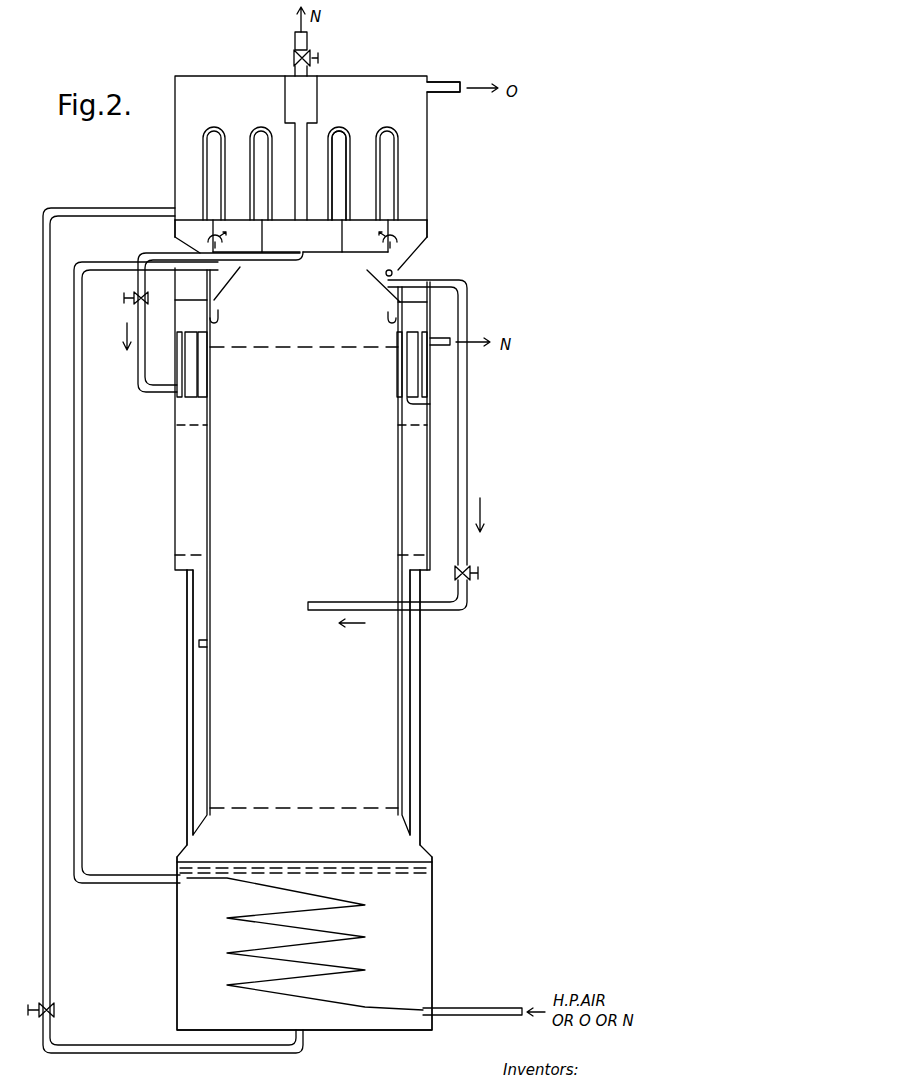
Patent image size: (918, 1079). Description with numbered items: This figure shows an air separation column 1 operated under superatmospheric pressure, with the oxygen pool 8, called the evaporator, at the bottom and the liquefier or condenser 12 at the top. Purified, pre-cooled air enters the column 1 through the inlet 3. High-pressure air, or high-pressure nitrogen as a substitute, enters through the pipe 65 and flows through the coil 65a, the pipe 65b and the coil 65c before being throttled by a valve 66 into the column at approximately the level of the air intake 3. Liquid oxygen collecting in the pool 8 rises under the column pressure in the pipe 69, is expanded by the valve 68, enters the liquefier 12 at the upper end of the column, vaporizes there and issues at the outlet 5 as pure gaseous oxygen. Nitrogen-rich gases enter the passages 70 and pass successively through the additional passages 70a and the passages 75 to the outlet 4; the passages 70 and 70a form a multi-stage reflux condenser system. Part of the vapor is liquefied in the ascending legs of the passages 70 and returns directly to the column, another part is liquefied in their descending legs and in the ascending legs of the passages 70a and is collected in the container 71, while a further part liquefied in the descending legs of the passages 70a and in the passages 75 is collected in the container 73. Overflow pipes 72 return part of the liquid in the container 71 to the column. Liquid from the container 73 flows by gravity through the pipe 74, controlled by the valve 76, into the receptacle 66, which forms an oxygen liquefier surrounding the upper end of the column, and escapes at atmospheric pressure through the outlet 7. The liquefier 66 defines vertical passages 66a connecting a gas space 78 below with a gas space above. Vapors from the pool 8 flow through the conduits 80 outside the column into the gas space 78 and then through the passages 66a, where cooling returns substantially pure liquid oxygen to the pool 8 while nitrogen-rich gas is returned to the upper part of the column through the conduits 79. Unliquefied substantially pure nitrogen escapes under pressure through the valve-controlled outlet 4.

The column 1 is at (303, 648).
The inlet 3 is at (210, 643).
The outlet 4 is at (294, 58).
The outlet 5 is at (446, 78).
The outlet 7 is at (440, 333).
The oxygen pool 8 is at (304, 943).
The liquefier 12 is at (185, 137).
The pipe 65 is at (468, 432).
The coil 65a is at (462, 290).
The pipe 65b is at (146, 572).
The coil 65c is at (393, 272).
The receptacle 66 is at (180, 352).
The vertical passages 66a is at (430, 403).
The valve 68 is at (45, 1003).
The pipe 69 is at (43, 607).
The passages 70 is at (203, 172).
The additional passages 70a is at (330, 155).
The container 71 is at (302, 236).
The overflow pipes 72 is at (301, 236).
The container 73 is at (302, 239).
The pipe 74 is at (138, 377).
The passages 75 is at (290, 133).
The valve 76 is at (121, 300).
The gas space 78 is at (185, 414).
The conduits 79 is at (218, 317).
The conduits 80 is at (190, 622).